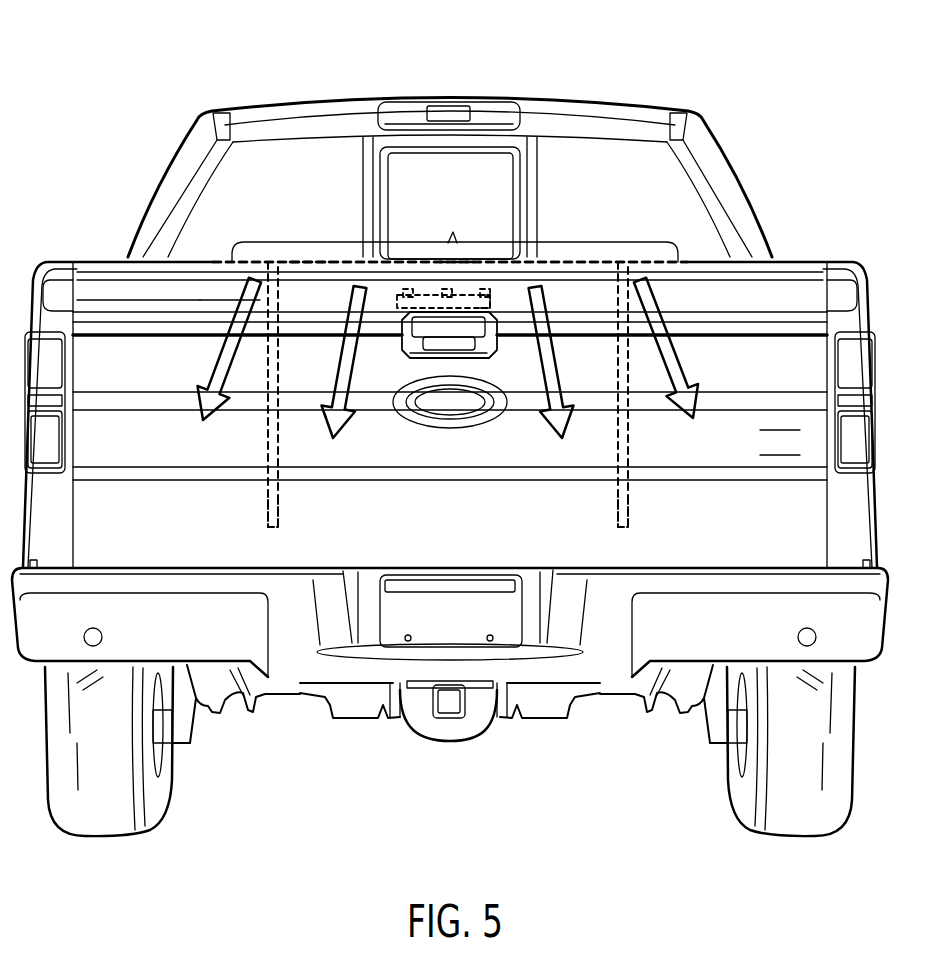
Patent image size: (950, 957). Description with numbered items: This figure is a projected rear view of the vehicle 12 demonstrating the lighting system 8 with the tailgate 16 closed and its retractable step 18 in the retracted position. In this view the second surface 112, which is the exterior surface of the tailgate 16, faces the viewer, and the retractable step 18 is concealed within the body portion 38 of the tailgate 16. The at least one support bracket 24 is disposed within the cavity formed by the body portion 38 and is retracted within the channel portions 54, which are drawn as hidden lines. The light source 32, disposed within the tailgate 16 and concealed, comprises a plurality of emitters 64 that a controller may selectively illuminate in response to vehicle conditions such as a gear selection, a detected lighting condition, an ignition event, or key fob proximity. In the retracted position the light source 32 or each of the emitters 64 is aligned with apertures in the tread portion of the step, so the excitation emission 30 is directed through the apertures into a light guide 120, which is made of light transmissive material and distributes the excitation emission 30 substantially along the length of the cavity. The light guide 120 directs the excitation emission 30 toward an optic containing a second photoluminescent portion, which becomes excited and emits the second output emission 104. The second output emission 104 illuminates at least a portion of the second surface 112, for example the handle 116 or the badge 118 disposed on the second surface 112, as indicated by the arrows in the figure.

The vehicle 12 is at (160, 48).
The lighting system 8 is at (742, 143).
The tailgate 16 is at (110, 292).
The body portion 38 is at (225, 293).
The excitation emission 30 is at (304, 258).
The retractable step 18 is at (662, 262).
The emitters 64 is at (447, 292).
The light guide 120 is at (457, 225).
The second output emission 104 is at (220, 371).
The support bracket 24 is at (267, 447).
The channel portion 54 is at (260, 508).
The light source 32 is at (490, 309).
The handle 116 is at (440, 342).
The badge 118 is at (460, 404).
The second surface 112 is at (805, 437).